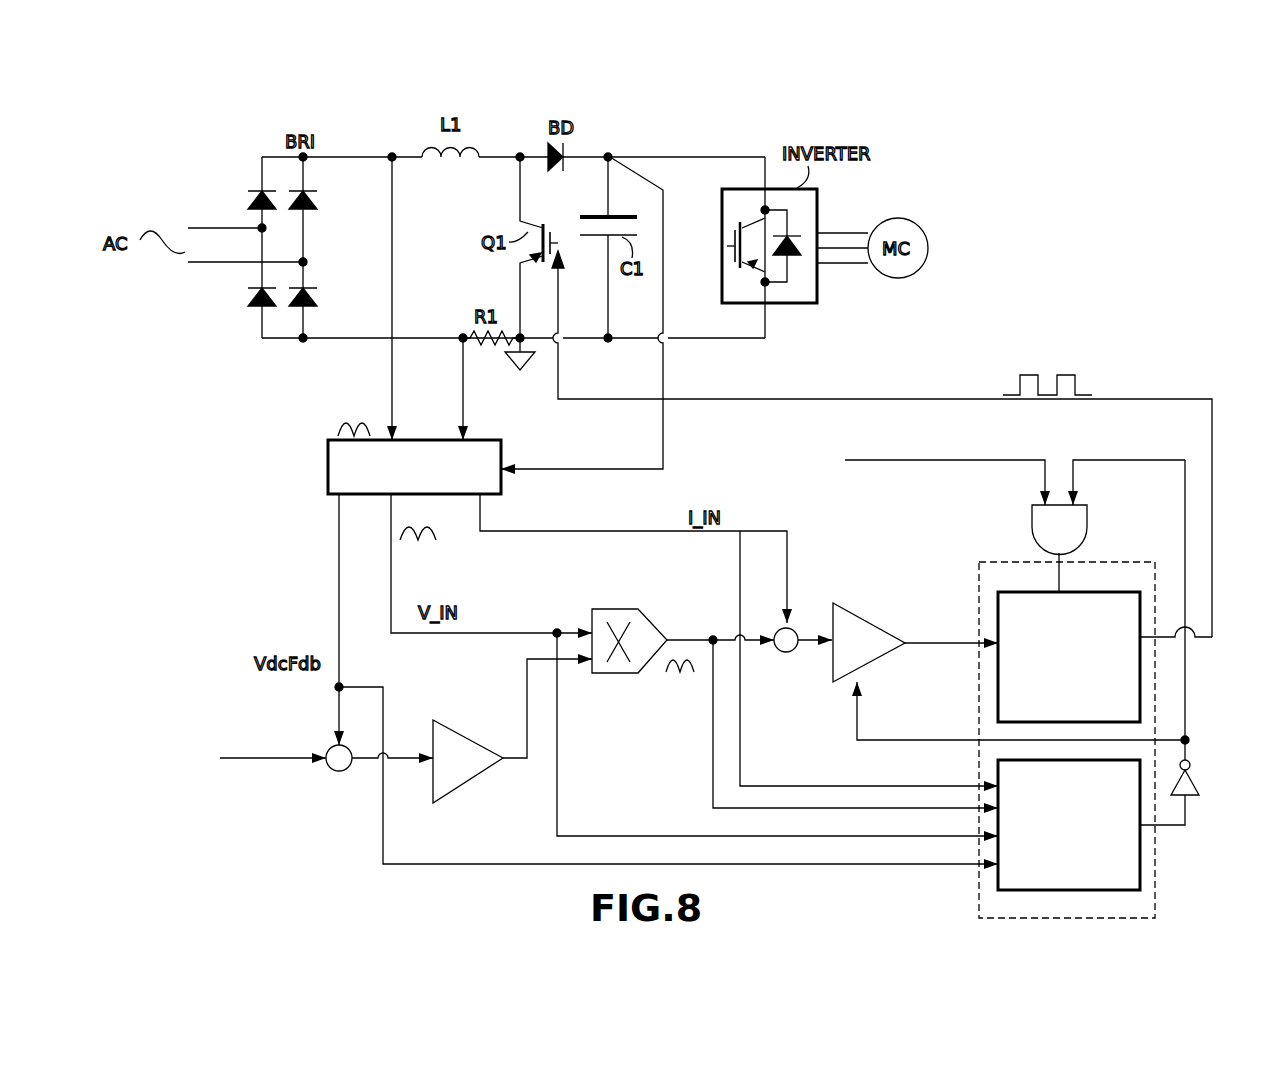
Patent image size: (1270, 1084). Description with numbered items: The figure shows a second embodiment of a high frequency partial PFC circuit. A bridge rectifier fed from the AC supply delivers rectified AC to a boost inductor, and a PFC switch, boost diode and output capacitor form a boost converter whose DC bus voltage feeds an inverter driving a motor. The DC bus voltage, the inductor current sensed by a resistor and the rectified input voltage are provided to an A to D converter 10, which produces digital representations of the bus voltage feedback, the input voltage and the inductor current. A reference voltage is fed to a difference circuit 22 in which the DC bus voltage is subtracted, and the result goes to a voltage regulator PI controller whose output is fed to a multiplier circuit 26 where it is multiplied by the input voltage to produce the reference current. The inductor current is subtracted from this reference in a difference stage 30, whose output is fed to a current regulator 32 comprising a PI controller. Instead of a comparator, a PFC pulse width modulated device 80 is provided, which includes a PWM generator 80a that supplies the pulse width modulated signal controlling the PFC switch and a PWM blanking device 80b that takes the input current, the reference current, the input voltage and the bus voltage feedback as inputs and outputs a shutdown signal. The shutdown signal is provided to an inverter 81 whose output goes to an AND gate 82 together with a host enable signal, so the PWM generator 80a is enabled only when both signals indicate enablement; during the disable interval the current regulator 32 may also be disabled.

The A to D converter 10 is at (328, 470).
The difference circuit 22 is at (352, 770).
The multiplier circuit 26 is at (632, 609).
The difference stage 30 is at (793, 652).
The current regulator 32 is at (842, 685).
The PFC pulse width modulated device 80 is at (1038, 647).
The pulse width modulated generator 80a is at (1110, 592).
The PWM blanking device 80b is at (1147, 865).
The inverter 81 is at (1197, 782).
The AND gate 82 is at (1089, 527).